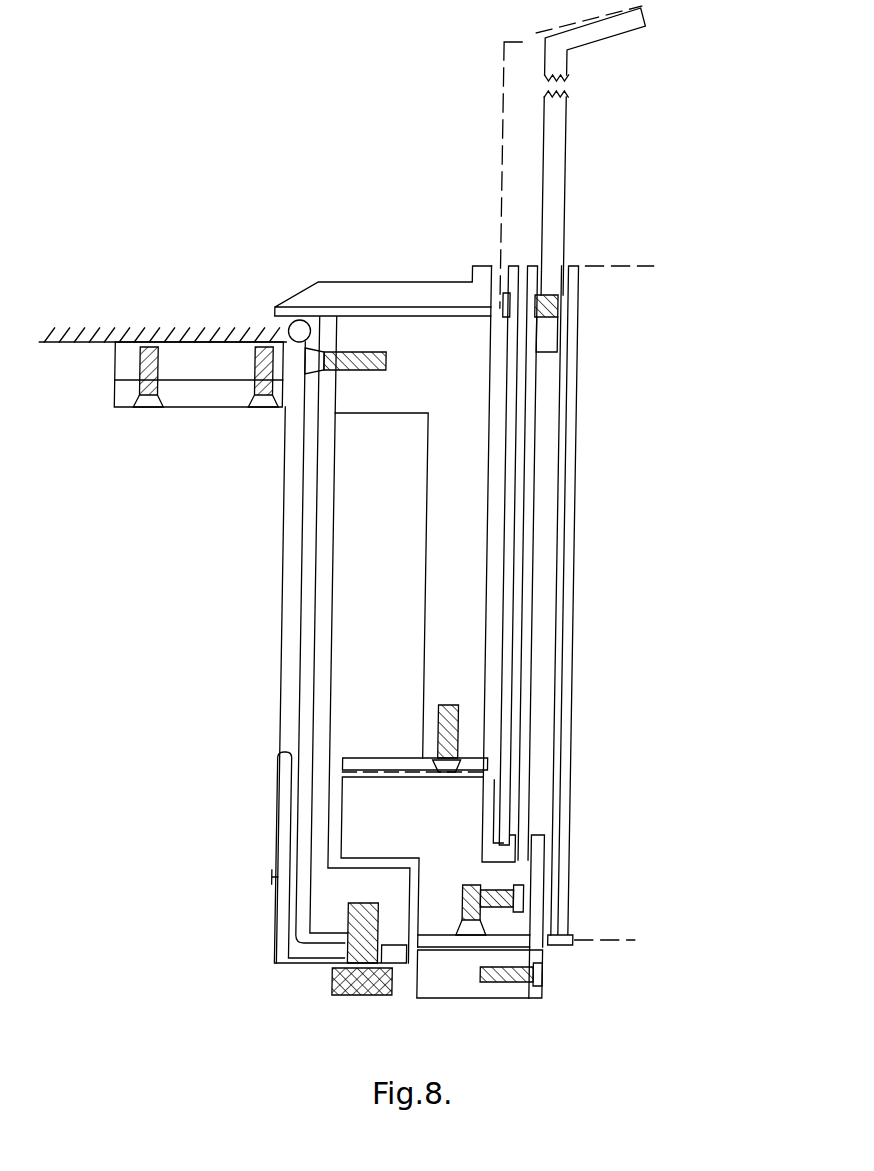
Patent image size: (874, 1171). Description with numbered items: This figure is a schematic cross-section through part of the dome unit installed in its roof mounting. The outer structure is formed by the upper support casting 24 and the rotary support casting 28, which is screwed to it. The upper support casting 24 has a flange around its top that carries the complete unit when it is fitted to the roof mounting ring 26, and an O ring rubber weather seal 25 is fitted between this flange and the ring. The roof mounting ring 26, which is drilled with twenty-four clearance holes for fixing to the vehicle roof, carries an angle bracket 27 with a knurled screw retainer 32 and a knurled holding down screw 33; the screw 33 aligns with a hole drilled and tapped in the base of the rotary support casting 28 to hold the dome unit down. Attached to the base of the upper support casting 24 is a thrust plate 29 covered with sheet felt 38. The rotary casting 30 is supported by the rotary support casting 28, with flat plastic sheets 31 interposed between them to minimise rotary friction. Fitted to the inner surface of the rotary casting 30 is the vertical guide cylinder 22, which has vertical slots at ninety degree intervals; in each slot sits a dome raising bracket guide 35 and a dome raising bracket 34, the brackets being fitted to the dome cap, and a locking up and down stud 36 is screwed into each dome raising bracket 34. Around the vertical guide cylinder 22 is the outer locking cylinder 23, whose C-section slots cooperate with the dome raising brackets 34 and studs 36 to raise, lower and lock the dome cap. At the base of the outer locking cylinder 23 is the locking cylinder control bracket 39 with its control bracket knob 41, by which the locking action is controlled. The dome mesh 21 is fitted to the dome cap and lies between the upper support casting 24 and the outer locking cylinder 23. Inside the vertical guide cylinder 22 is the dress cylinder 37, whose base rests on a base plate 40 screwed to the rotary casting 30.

The dome mesh 21 is at (495, 145).
The vertical guide cylinder 22 is at (532, 260).
The outer locking cylinder 23 is at (513, 265).
The upper support casting 24 is at (440, 337).
The O ring rubber weather seal 25 is at (288, 330).
The roof mounting ring 26 is at (225, 367).
The angle bracket 27 is at (292, 543).
The rotary support casting 28 is at (326, 592).
The thrust plate 29 is at (395, 762).
The rotary casting 30 is at (417, 818).
The flat plastic sheets 31 is at (336, 825).
The knurled screw retainer 32 is at (283, 912).
The knurled holding down screw 33 is at (332, 982).
The dome raising bracket 34 is at (551, 148).
The dome raising bracket guide 35 is at (564, 260).
The locking up and down stud 36 is at (545, 305).
The dress cylinder 37 is at (571, 565).
The sheet felt 38 is at (492, 773).
The locking cylinder control bracket 39 is at (535, 880).
The base plate 40 is at (645, 942).
The control bracket knob 41 is at (548, 975).